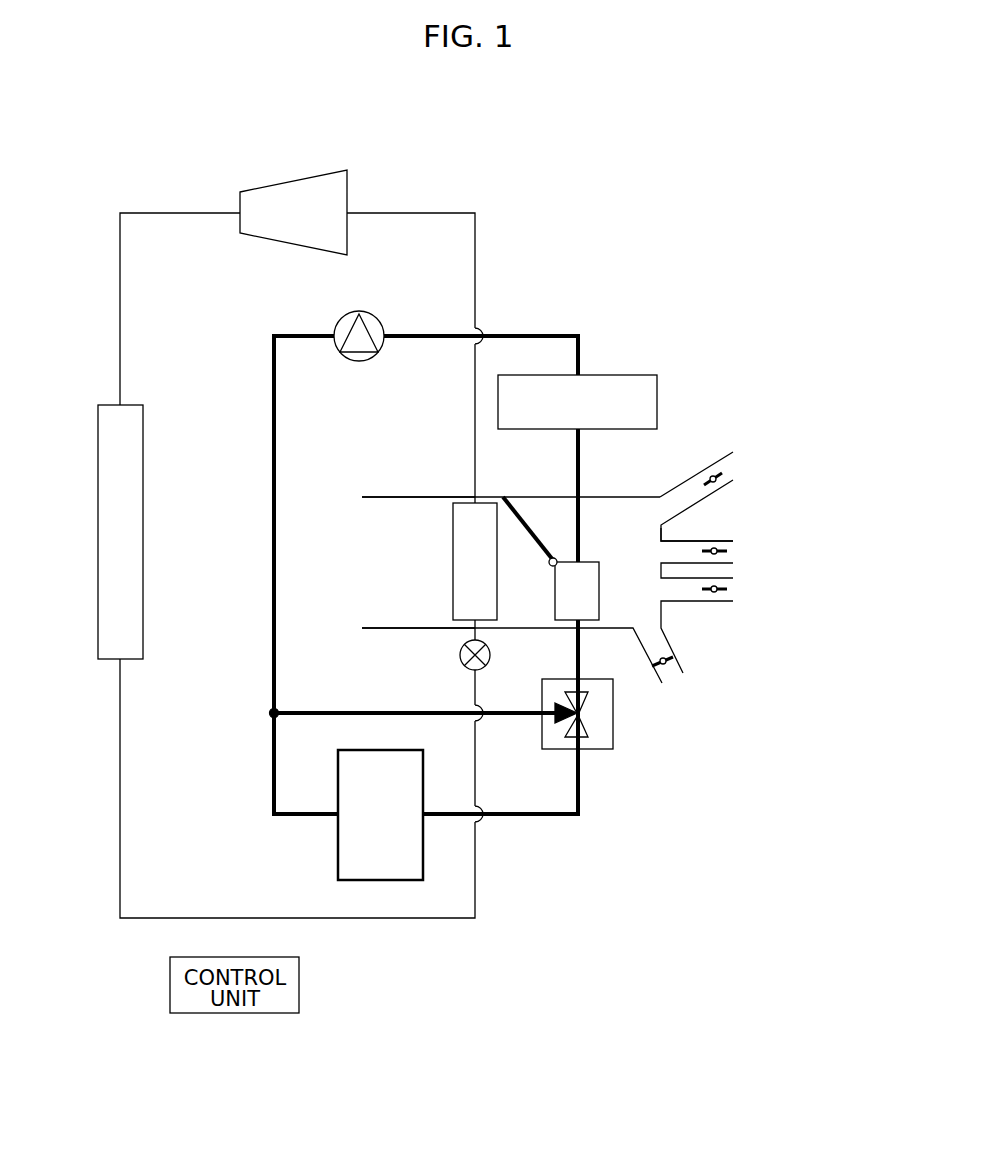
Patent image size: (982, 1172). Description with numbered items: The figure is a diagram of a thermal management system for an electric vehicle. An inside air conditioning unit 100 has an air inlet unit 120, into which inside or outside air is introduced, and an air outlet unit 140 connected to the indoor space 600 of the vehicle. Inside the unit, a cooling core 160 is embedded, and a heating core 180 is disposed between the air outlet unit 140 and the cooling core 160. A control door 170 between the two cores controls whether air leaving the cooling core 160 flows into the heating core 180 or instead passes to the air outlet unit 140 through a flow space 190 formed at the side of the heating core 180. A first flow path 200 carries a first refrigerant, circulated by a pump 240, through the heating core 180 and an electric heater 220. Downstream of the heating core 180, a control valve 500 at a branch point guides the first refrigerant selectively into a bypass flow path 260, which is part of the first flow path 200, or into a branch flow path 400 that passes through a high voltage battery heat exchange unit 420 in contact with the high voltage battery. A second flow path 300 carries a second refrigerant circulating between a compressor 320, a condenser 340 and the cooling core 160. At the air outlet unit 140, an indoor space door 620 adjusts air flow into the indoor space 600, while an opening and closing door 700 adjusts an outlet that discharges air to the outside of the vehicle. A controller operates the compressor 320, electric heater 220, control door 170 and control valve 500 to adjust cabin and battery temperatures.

The inside air conditioning unit 100 is at (350, 621).
The air inlet unit 120 is at (400, 531).
The air outlet unit 140 is at (633, 553).
The cooling core 160 is at (453, 562).
The control door 170 is at (522, 510).
The heating core 180 is at (599, 608).
The flow space 190 is at (595, 521).
The first flow path 200 is at (522, 335).
The electric heater 220 is at (625, 380).
The pump 240 is at (338, 318).
The bypass flow path 260 is at (513, 715).
The second flow path 300 is at (385, 212).
The compressor 320 is at (275, 190).
The condenser 340 is at (108, 410).
The branch flow path 400 is at (557, 817).
The high voltage battery heat exchange unit 420 is at (383, 872).
The control valve 500 is at (613, 735).
The indoor space 600 is at (747, 597).
The indoor space door 620 is at (723, 472).
The opening and closing door 700 is at (665, 665).